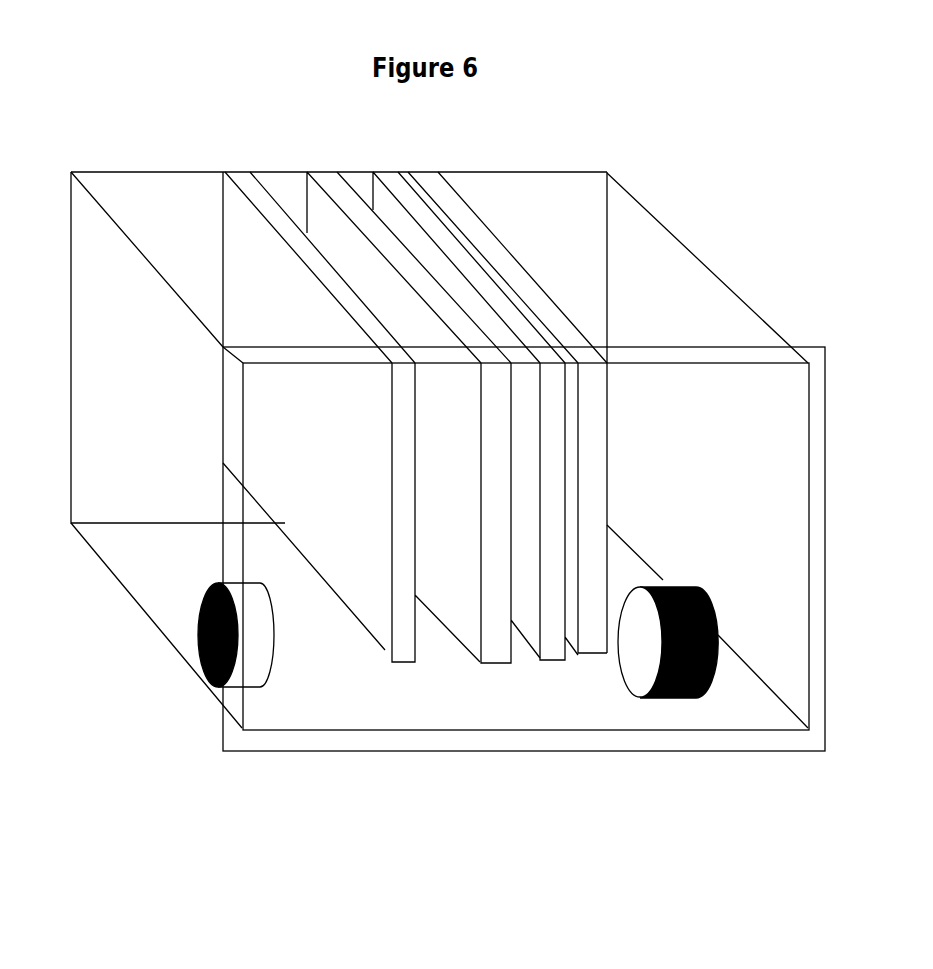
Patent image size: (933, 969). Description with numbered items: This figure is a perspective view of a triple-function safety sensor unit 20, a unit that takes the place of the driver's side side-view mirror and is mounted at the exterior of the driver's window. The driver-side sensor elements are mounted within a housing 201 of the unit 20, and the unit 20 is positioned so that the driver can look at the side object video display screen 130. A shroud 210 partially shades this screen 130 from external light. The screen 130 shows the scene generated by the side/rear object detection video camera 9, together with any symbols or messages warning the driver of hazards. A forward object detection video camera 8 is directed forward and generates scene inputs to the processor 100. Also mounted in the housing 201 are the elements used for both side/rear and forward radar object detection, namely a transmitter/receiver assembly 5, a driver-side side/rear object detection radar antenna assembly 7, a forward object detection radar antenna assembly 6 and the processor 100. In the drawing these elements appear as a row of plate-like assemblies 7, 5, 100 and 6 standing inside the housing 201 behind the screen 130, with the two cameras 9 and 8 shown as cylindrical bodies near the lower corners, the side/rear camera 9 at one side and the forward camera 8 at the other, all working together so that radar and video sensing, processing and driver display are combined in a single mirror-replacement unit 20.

The triple-function safety sensor unit 20 is at (339, 402).
The driver-side side/rear object detection radar antenna assembly 7 is at (249, 175).
The transmitter/receiver assembly 5 is at (343, 177).
The processor 100 is at (397, 177).
The forward object detection radar antenna assembly 6 is at (427, 188).
The housing 201 is at (687, 267).
The shroud 210 is at (828, 538).
The side object video display screen 130 is at (715, 380).
The side/rear object detection video camera 9 is at (190, 608).
The forward object detection video camera 8 is at (725, 668).